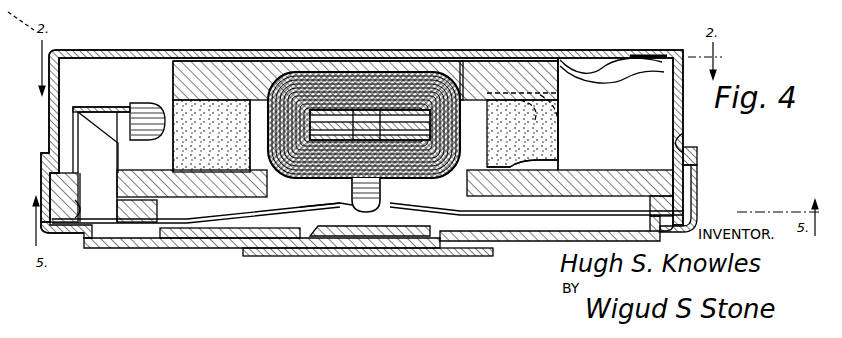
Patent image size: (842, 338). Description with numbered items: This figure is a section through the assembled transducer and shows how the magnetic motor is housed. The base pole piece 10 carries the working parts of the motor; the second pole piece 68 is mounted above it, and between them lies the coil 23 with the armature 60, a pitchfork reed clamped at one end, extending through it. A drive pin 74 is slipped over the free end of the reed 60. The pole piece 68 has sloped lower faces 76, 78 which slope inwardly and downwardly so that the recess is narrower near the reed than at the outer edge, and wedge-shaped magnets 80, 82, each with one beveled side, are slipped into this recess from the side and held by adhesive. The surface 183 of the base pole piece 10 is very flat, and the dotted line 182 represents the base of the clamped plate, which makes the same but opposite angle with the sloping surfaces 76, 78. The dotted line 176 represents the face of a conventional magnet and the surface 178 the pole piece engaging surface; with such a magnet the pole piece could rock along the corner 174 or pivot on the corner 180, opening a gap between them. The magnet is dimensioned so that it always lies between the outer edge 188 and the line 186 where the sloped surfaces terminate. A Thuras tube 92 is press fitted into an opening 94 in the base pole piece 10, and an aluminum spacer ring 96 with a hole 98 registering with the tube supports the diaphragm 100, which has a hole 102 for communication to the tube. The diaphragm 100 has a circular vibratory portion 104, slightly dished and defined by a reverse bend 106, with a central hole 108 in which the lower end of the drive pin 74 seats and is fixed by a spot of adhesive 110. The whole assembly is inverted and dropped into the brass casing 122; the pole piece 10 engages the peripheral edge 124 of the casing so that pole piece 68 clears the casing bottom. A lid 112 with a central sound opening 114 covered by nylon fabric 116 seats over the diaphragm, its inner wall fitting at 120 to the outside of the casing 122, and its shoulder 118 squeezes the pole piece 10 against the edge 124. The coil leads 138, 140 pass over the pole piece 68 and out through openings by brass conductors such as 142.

The pole piece 10 is at (679, 179).
The coil 23 is at (378, 76).
The armature 60 is at (432, 124).
The second pole piece 68 is at (480, 72).
The drive pin 74 is at (370, 213).
The sloped lower face 76 is at (217, 112).
The sloped lower face 78 is at (524, 76).
The magnet 80 is at (233, 98).
The magnet 82 is at (503, 106).
The Thuras tube 92 is at (97, 107).
The opening 94 is at (68, 234).
The spacer ring 96 is at (693, 206).
The hole 98 is at (107, 230).
The diaphragm 100 is at (158, 248).
The hole 102 is at (96, 234).
The circular vibratory portion 104 is at (222, 228).
The reverse bend 106 is at (185, 224).
The central hole 108 is at (348, 210).
The spot of adhesive 110 is at (387, 211).
The lid 112 is at (527, 236).
The central sound opening 114 is at (355, 229).
The nylon fabric 116 is at (270, 256).
The shoulder 118 is at (693, 213).
The inner wall 120 is at (683, 139).
The casing 122 is at (687, 48).
The peripheral edge 124 is at (697, 153).
The coil lead 138 is at (613, 62).
The coil lead 140 is at (620, 70).
The brass conductor 142 is at (643, 50).
The corner 174 is at (462, 70).
The dotted line 176 is at (540, 104).
The pole piece engaging surface 178 is at (557, 89).
The corner 180 is at (560, 94).
The dotted line 182 is at (318, 98).
The surface 183 is at (563, 164).
The termination point 186 is at (264, 102).
The outer edge 188 is at (195, 96).